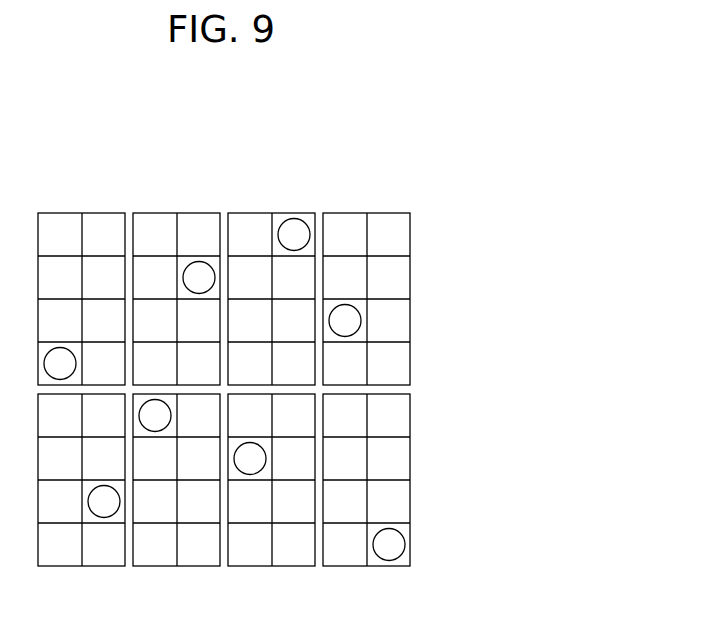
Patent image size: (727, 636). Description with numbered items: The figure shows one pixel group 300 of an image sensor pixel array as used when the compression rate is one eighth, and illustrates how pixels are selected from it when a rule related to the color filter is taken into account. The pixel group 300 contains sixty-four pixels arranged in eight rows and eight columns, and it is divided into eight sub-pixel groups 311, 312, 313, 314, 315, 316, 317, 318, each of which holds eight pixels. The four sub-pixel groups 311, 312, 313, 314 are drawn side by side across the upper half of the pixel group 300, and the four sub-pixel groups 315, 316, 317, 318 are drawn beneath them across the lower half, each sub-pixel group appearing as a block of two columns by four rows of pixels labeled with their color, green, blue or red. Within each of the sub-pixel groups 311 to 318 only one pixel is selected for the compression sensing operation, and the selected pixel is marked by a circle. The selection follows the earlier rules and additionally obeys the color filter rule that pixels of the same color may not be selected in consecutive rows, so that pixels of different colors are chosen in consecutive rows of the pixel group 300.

The pixel group 300 is at (424, 137).
The sub-pixel group 311 is at (82, 213).
The sub-pixel group 312 is at (177, 213).
The sub-pixel group 313 is at (272, 213).
The sub-pixel group 314 is at (367, 213).
The sub-pixel group 315 is at (82, 566).
The sub-pixel group 316 is at (177, 566).
The sub-pixel group 317 is at (272, 566).
The sub-pixel group 318 is at (367, 566).